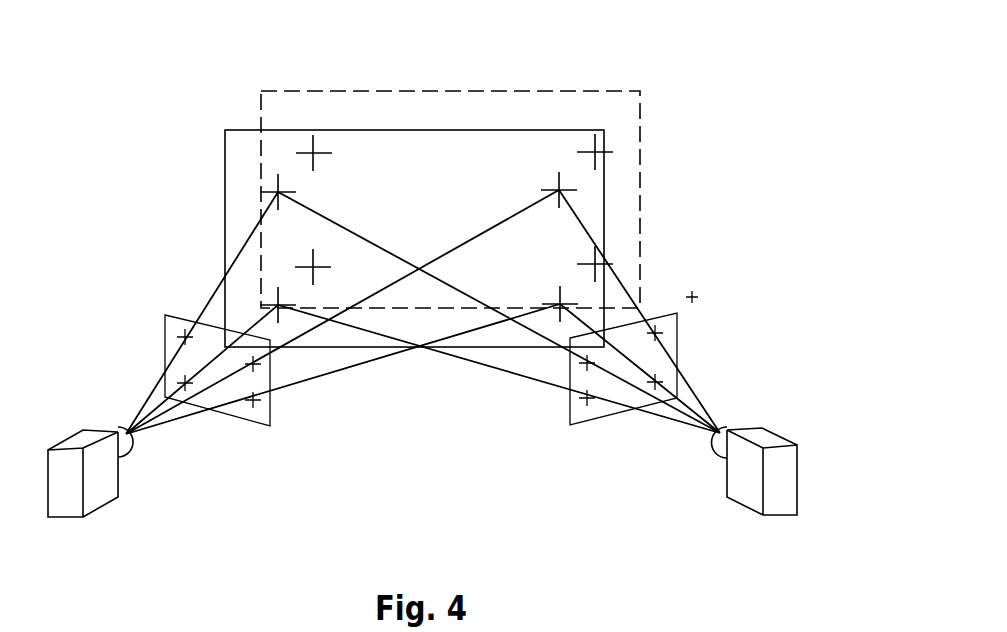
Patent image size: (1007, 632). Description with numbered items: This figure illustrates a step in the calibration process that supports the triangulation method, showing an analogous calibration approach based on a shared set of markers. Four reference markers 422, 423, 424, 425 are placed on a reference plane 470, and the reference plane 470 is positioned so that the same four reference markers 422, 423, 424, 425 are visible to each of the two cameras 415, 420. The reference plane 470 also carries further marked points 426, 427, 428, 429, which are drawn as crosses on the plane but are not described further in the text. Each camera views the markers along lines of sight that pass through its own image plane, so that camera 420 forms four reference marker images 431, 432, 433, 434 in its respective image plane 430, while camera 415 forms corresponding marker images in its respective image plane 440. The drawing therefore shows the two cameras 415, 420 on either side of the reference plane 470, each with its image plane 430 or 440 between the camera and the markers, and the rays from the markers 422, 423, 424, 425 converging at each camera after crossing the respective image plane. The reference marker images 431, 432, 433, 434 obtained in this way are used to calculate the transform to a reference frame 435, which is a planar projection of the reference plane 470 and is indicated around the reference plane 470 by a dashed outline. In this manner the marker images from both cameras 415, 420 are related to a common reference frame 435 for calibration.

The camera 415 is at (763, 505).
The camera 420 is at (95, 514).
The reference marker 422 is at (280, 192).
The reference marker 423 is at (280, 304).
The reference marker 424 is at (559, 190).
The reference marker 425 is at (553, 295).
The calibration point 426 is at (332, 152).
The calibration point 427 is at (318, 262).
The calibration point 428 is at (593, 150).
The calibration point 429 is at (590, 257).
The image plane 430 is at (183, 318).
The reference marker image 431 is at (183, 335).
The reference marker image 432 is at (258, 370).
The reference marker image 433 is at (180, 380).
The reference marker image 434 is at (253, 406).
The reference frame 435 is at (383, 90).
The image plane 440 is at (552, 435).
The reference plane 470 is at (347, 130).